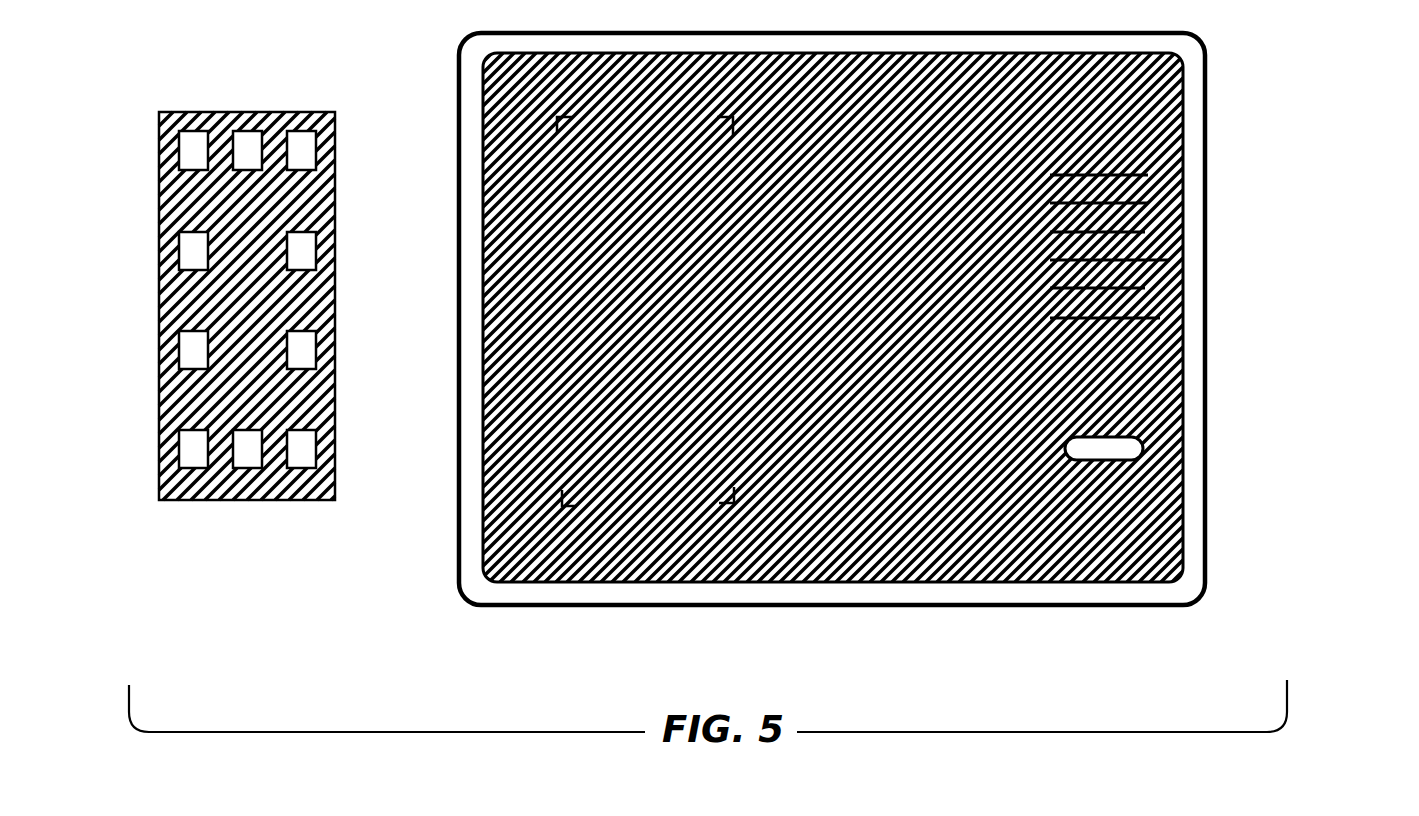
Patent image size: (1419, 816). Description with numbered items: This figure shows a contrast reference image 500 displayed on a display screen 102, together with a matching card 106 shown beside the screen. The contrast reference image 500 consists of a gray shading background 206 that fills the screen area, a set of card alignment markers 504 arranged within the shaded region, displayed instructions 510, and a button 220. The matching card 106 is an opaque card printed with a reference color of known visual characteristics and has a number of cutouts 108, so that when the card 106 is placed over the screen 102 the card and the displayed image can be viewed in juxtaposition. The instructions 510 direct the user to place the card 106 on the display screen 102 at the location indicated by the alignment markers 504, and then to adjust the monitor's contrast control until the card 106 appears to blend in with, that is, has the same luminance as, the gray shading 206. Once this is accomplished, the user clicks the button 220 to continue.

The display screen 102 is at (1110, 607).
The matching card 106 is at (246, 500).
The cutout 108 is at (244, 112).
The gray shading background 206 is at (1160, 525).
The button 220 is at (1143, 437).
The contrast reference image 500 is at (1183, 458).
The card alignment markers 504 is at (563, 507).
The instructions 510 is at (1160, 300).